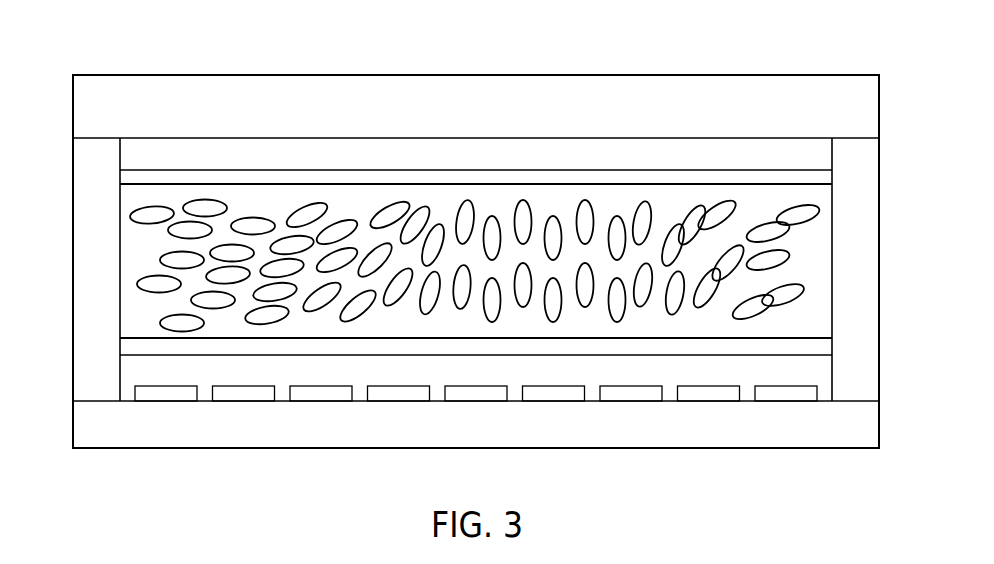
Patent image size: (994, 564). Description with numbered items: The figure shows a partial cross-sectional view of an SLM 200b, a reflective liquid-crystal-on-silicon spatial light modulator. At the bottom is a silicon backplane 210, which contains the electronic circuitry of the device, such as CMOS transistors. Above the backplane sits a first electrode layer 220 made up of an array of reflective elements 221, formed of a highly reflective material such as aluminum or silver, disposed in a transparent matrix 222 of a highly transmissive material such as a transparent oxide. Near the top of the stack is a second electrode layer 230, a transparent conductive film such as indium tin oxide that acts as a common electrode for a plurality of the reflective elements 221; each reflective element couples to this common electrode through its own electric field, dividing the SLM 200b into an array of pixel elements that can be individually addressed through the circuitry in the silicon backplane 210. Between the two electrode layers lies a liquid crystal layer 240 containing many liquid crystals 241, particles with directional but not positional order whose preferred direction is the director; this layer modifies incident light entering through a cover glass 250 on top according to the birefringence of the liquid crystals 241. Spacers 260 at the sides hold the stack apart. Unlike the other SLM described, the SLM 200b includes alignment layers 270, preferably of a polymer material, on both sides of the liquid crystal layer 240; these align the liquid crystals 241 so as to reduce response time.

The SLM 200b is at (43, 38).
The silicon backplane 210 is at (212, 448).
The first electrode layer 220 is at (477, 435).
The reflective element 221 is at (812, 401).
The transparent matrix 222 is at (740, 369).
The second electrode layer 230 is at (214, 138).
The liquid crystal layer 240 is at (419, 262).
The liquid crystal 241 is at (146, 212).
The cover glass 250 is at (388, 75).
The spacer 260 is at (72, 318).
The alignment layer 270 is at (617, 168).